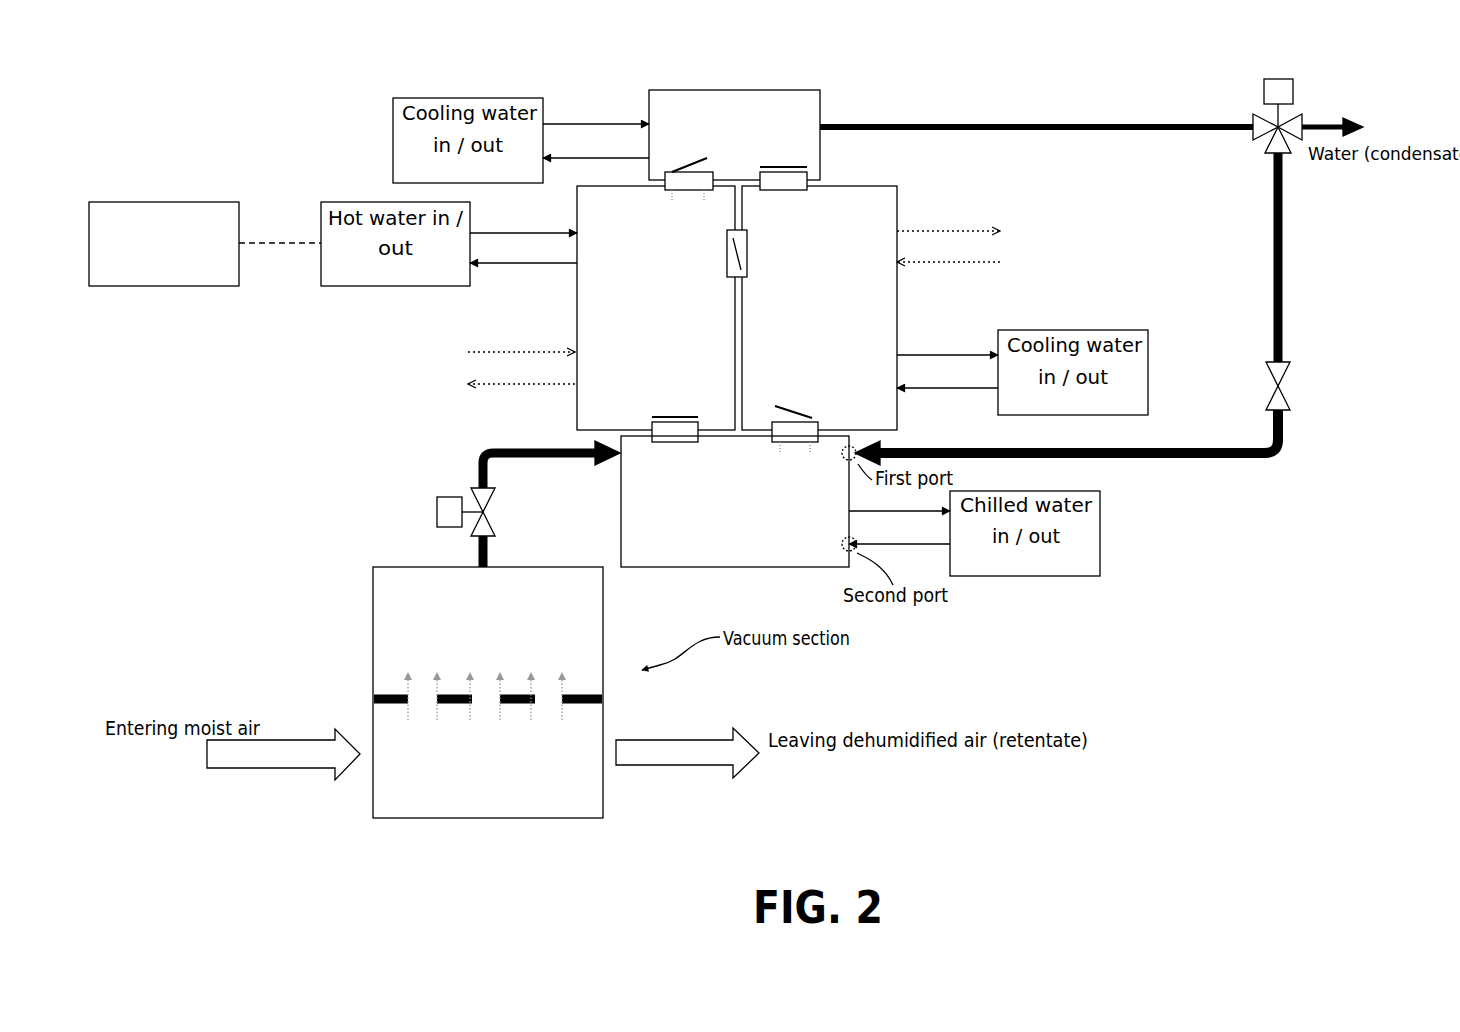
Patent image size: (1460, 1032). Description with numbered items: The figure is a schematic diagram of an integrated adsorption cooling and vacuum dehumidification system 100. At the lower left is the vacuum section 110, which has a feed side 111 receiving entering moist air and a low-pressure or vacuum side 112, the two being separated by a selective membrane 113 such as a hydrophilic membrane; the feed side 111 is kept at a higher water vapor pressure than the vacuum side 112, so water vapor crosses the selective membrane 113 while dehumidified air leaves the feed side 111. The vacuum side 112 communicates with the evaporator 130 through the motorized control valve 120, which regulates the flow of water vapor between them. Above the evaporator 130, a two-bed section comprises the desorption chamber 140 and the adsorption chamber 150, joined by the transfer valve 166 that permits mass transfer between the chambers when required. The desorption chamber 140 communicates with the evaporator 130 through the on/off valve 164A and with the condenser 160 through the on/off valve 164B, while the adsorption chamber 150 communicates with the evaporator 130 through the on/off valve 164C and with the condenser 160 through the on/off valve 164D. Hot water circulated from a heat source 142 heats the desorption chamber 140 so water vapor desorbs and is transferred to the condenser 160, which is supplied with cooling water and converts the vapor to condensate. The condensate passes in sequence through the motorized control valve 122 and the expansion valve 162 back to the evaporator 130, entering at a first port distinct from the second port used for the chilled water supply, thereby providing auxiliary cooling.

The integrated adsorption cooling and vacuum dehumidification system 100 is at (210, 47).
The vacuum section 110 is at (445, 706).
The feed side 111 is at (543, 814).
The low-pressure or vacuum side 112 is at (568, 627).
The selective membrane 113 is at (386, 686).
The motorized control valve 120 is at (437, 489).
The motorized control valve 122 is at (1242, 104).
The evaporator 130 is at (818, 512).
The desorption chamber 140 is at (720, 336).
The heat source 142 is at (183, 259).
The adsorption chamber 150 is at (880, 336).
The condenser 160 is at (803, 139).
The expansion valve 162 is at (1296, 355).
The on/off valve 164A is at (661, 414).
The on/off valve 164B is at (667, 199).
The on/off valve 164C is at (813, 403).
The on/off valve 164D is at (801, 201).
The transfer valve 166 is at (753, 249).